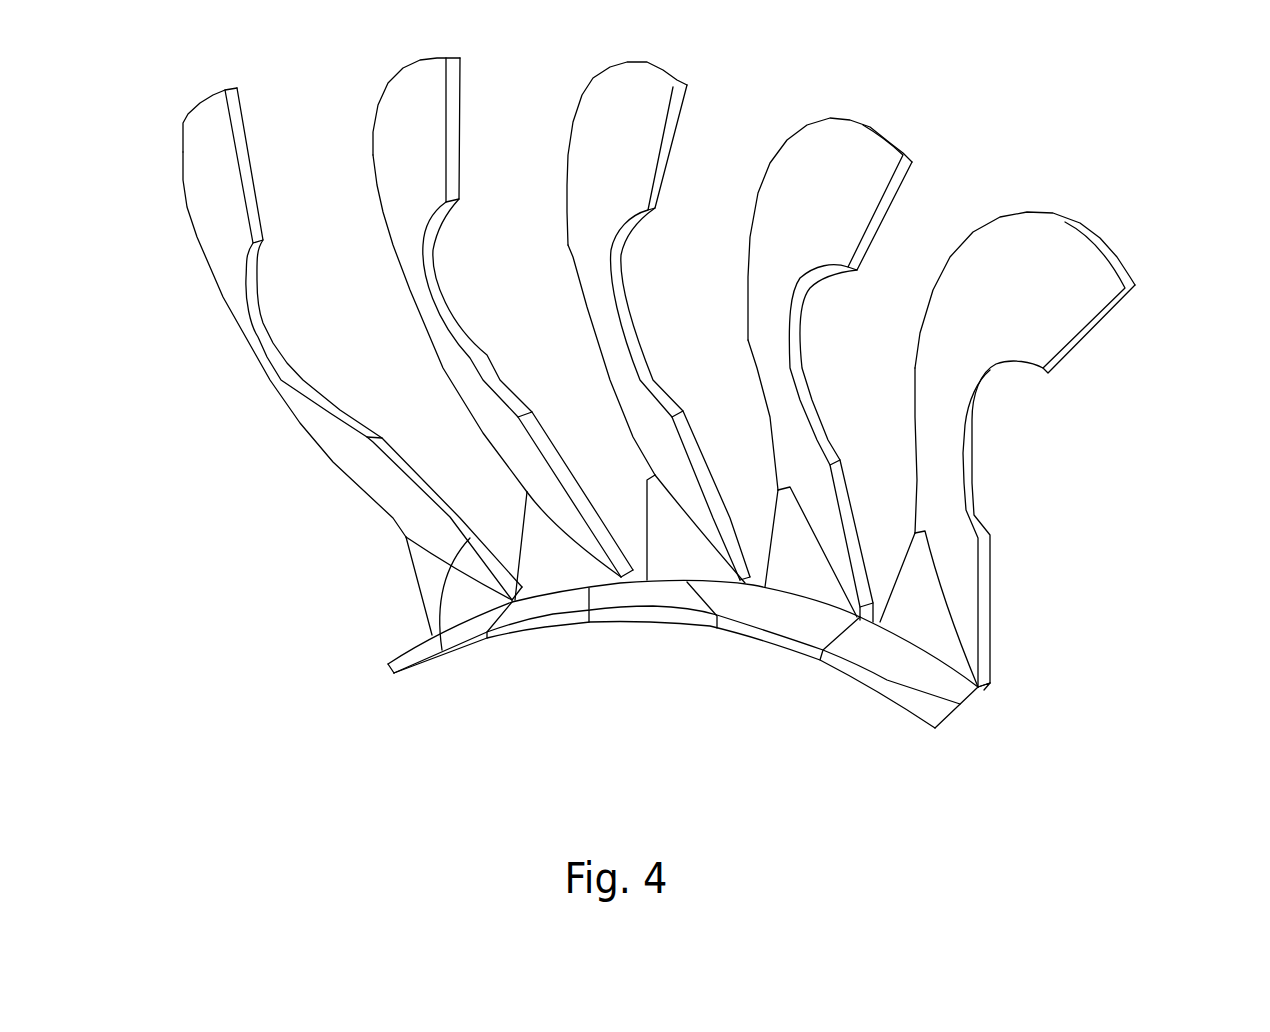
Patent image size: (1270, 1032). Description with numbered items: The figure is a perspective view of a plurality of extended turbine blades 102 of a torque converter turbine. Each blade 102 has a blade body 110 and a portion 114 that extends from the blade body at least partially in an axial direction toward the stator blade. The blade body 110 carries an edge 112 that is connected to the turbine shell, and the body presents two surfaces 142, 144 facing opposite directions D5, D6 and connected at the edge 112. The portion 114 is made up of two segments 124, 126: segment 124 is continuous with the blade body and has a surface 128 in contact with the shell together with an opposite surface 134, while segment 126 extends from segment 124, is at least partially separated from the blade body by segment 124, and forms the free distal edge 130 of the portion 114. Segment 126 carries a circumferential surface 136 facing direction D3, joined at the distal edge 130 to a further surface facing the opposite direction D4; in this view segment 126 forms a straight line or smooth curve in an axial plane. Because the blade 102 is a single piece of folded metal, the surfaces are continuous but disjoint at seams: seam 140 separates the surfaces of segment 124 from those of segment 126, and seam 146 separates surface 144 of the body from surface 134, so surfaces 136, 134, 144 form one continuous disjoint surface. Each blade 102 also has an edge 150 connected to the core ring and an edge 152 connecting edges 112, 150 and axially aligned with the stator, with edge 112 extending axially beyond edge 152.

The blade 102 is at (720, 438).
The blade body 110 is at (1049, 373).
The edge 112 is at (977, 226).
The portion 114 is at (398, 593).
The segment 124 is at (964, 608).
The segment 126 is at (998, 715).
The surface 128 is at (905, 571).
The distal edge 130 is at (863, 675).
The surface 134 is at (947, 653).
The circumferential surface 136 is at (940, 707).
The seam 140 is at (660, 581).
The surface 142 is at (972, 430).
The surface 144 is at (1092, 272).
The seam 146 is at (560, 540).
The edge 150 is at (966, 482).
The edge 152 is at (442, 650).
The direction D3 is at (698, 665).
The direction D4 is at (742, 678).
The direction D5 is at (1196, 395).
The direction D6 is at (1128, 390).